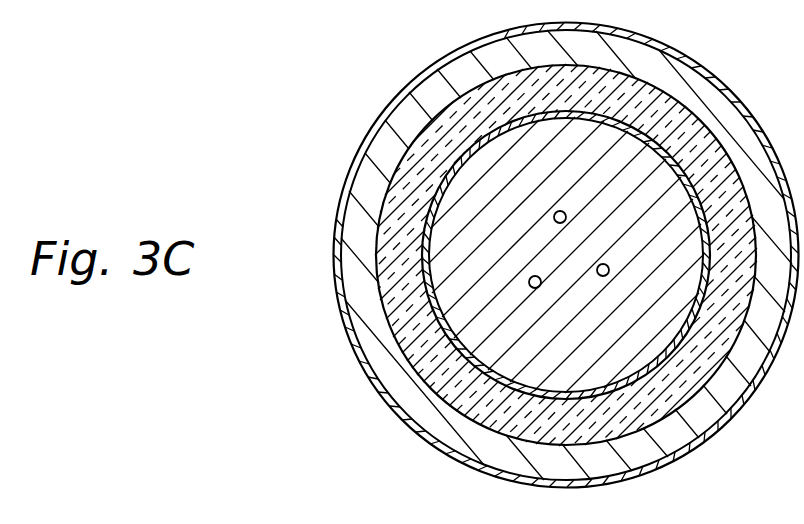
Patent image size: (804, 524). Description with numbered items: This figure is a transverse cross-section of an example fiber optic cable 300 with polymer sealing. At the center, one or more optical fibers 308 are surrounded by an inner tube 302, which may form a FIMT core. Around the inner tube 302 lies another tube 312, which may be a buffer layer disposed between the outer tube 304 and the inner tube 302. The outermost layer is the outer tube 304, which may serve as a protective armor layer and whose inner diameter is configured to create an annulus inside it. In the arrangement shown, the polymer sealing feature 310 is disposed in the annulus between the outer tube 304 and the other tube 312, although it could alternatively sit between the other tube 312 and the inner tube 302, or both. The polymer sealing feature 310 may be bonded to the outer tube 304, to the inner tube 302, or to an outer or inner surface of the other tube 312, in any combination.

The fiber optic cable 300 is at (314, 38).
The inner tube 302 is at (460, 152).
The outer tube 304 is at (348, 182).
The optical fibers 308 is at (530, 285).
The polymer sealing feature 310 is at (410, 400).
The other tube 312 is at (397, 256).